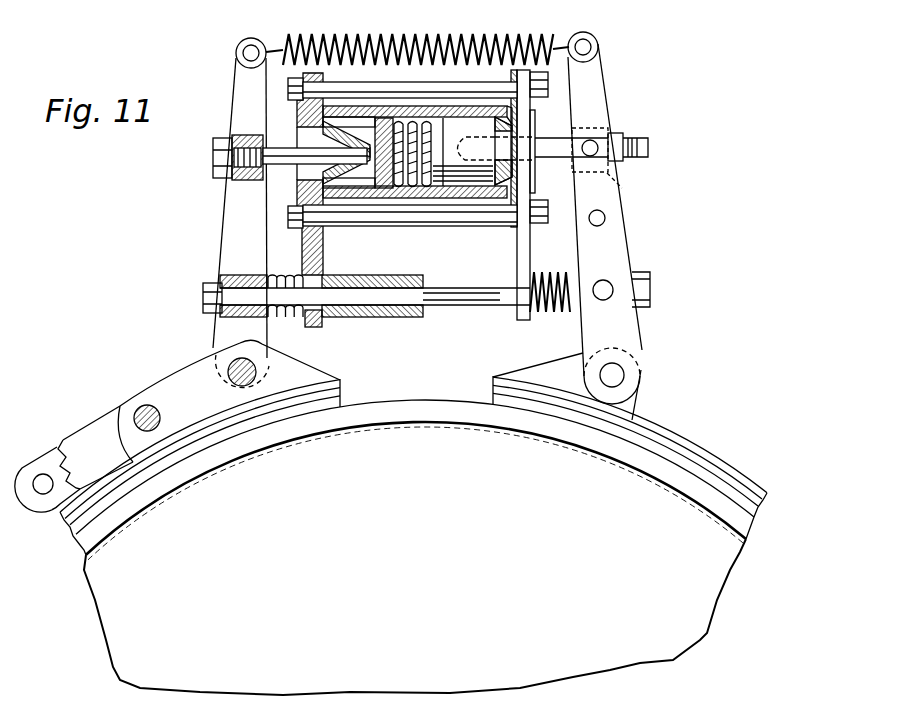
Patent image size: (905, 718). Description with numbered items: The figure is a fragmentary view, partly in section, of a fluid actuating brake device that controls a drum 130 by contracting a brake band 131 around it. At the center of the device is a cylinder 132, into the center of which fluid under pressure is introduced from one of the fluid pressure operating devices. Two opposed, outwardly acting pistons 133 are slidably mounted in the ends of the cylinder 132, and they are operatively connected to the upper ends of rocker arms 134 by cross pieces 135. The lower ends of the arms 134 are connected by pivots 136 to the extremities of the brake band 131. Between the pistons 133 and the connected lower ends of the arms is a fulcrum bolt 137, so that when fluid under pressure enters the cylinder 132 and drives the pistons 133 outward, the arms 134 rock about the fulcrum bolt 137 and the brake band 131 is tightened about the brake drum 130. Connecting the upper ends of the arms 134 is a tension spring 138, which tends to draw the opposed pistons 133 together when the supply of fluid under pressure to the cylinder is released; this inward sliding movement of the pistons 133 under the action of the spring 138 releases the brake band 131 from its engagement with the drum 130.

The drum 130 is at (381, 411).
The brake band 131 is at (253, 420).
The cylinder 132 is at (418, 202).
The pistons 133 is at (370, 202).
The rocker arms 134 is at (242, 123).
The cross pieces 135 is at (243, 180).
The pivots 136 is at (236, 370).
The fulcrum bolt 137 is at (372, 293).
The tension spring 138 is at (530, 27).